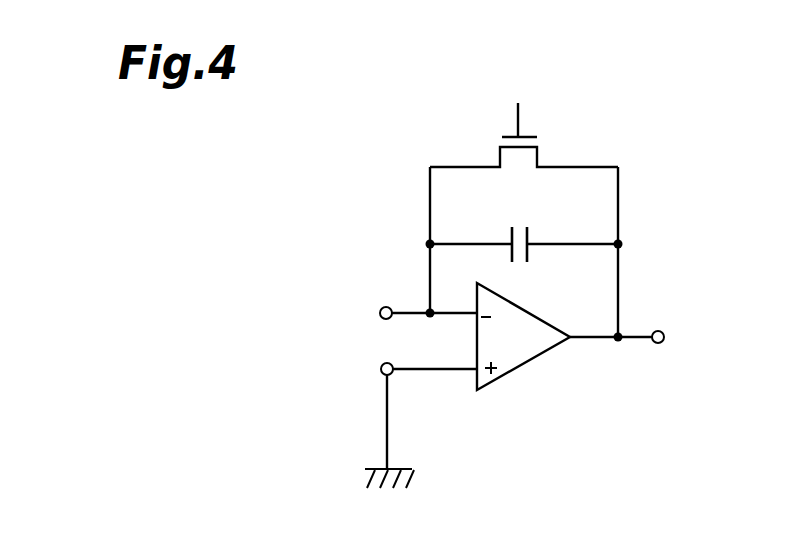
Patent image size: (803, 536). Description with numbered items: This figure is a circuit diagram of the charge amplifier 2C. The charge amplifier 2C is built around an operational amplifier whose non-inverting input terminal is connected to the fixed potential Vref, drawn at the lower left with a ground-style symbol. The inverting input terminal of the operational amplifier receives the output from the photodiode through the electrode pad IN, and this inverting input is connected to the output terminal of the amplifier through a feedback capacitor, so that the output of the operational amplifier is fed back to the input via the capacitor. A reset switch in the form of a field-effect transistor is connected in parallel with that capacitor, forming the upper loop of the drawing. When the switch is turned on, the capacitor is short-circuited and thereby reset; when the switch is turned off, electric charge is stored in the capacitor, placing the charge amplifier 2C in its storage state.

The electrode pad IN is at (380, 307).
The fixed potential Vref is at (402, 468).
The charge amplifier 2C is at (684, 240).